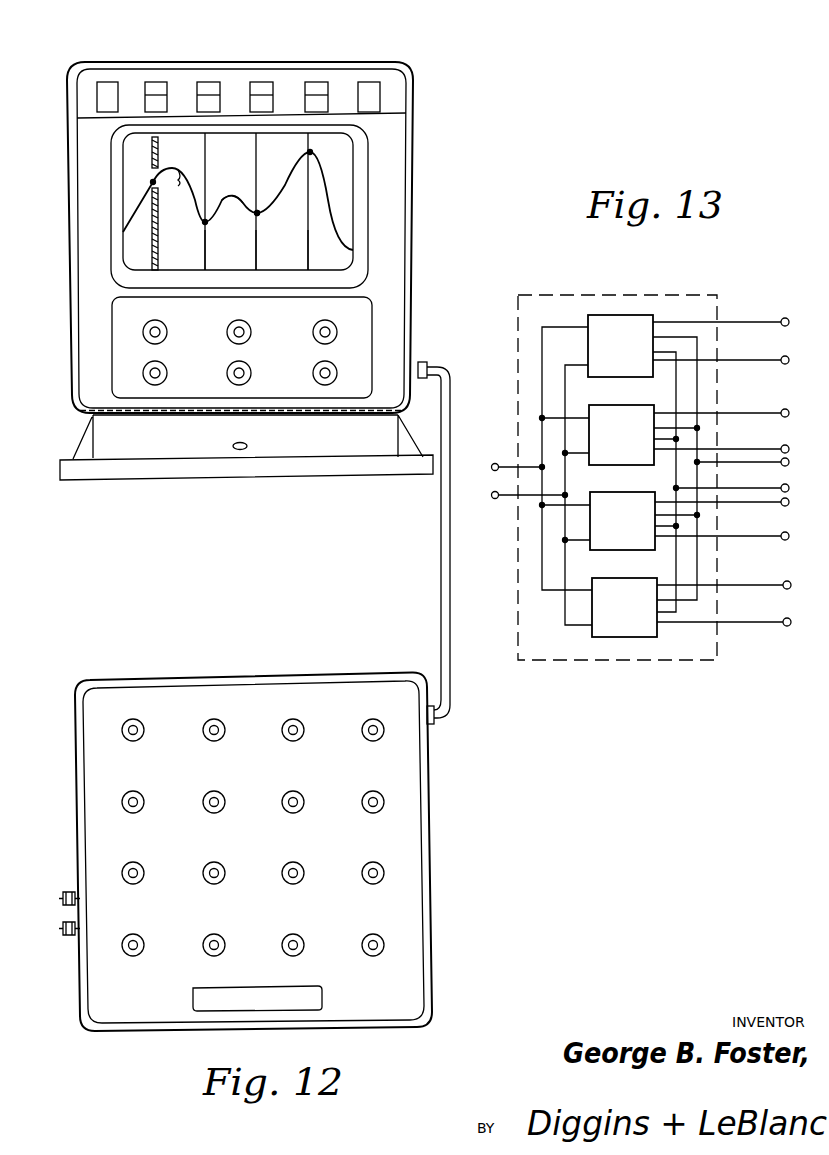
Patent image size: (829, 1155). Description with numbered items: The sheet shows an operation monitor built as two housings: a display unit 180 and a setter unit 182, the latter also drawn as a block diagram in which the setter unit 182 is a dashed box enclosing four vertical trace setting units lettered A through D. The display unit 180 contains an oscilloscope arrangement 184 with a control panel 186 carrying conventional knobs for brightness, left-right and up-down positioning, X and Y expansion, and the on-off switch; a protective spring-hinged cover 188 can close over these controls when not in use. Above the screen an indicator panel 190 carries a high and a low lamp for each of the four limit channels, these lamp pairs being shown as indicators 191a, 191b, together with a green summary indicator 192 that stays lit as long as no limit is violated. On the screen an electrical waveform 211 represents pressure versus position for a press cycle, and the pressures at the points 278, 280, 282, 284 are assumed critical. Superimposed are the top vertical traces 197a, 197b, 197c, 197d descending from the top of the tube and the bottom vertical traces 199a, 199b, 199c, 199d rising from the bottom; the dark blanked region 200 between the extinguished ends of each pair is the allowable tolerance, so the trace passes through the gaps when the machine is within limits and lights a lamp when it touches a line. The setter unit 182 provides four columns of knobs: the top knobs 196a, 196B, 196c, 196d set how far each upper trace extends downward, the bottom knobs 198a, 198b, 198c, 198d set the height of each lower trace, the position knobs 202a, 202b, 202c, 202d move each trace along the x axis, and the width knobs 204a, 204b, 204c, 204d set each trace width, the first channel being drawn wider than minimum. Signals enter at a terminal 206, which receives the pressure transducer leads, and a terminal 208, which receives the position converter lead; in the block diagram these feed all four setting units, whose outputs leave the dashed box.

In FIG. 12, the display unit 180 is at (252, 256).
In FIG. 12, the setter unit 182 is at (236, 826).
In FIG. 13, the setter unit 182 is at (665, 290).
In FIG. 12, the oscilloscope arrangement 184 is at (365, 202).
In FIG. 12, the control panel 186 is at (257, 207).
In FIG. 12, the protective spring-hinged cover 188 is at (167, 332).
In FIG. 12, the indicator panel 190 is at (82, 67).
In FIG. 12, the high-low indicator 191a is at (160, 82).
In FIG. 12, the high-low indicator 191b is at (168, 101).
In FIG. 12, the green summary indicator 192 is at (112, 82).
In FIG. 12, the top knob 196a is at (142, 737).
In FIG. 12, the top knob 196B is at (223, 737).
In FIG. 12, the top knob 196c is at (302, 737).
In FIG. 12, the top knob 196d is at (382, 737).
In FIG. 12, the top vertical trace 197a is at (160, 160).
In FIG. 12, the top vertical trace 197b is at (205, 163).
In FIG. 12, the top vertical trace 197c is at (257, 163).
In FIG. 12, the top vertical trace 197d is at (312, 165).
In FIG. 12, the bottom knob 198a is at (142, 809).
In FIG. 12, the bottom knob 198b is at (223, 809).
In FIG. 12, the bottom knob 198c is at (302, 809).
In FIG. 12, the bottom knob 198d is at (382, 809).
In FIG. 12, the bottom vertical trace 199a is at (158, 208).
In FIG. 12, the bottom vertical trace 199b is at (205, 263).
In FIG. 12, the bottom vertical trace 199c is at (256, 263).
In FIG. 12, the bottom vertical trace 199d is at (308, 263).
In FIG. 12, the blanked region 200 is at (185, 178).
In FIG. 12, the position knob 202a is at (142, 952).
In FIG. 12, the position knob 202b is at (223, 952).
In FIG. 12, the position knob 202c is at (302, 952).
In FIG. 12, the position knob 202d is at (382, 952).
In FIG. 12, the width knob 204a is at (142, 880).
In FIG. 12, the width knob 204b is at (223, 880).
In FIG. 12, the width knob 204c is at (302, 880).
In FIG. 12, the width knob 204d is at (382, 880).
In FIG. 12, the terminal 206 is at (66, 890).
In FIG. 13, the terminal 206 is at (492, 460).
In FIG. 12, the terminal 208 is at (68, 937).
In FIG. 13, the terminal 208 is at (492, 502).
In FIG. 12, the electrical waveform 211 is at (224, 201).
In FIG. 12, the critical point 278 is at (153, 182).
In FIG. 12, the critical point 280 is at (205, 222).
In FIG. 12, the critical point 282 is at (258, 214).
In FIG. 12, the critical point 284 is at (278, 211).